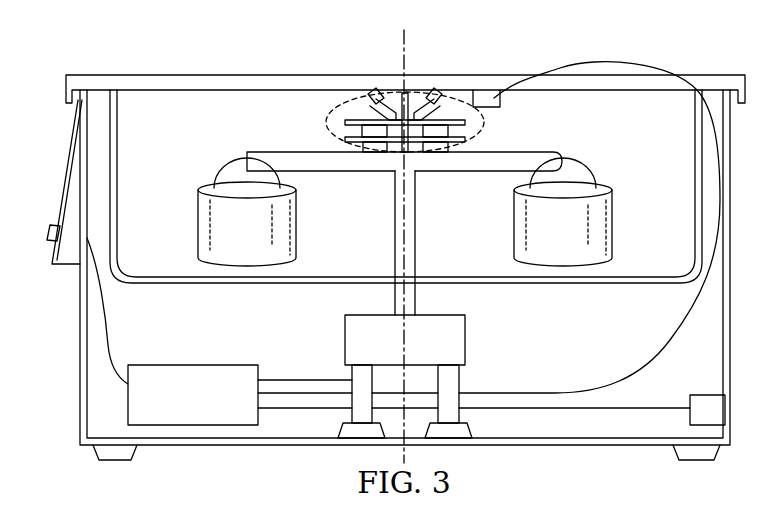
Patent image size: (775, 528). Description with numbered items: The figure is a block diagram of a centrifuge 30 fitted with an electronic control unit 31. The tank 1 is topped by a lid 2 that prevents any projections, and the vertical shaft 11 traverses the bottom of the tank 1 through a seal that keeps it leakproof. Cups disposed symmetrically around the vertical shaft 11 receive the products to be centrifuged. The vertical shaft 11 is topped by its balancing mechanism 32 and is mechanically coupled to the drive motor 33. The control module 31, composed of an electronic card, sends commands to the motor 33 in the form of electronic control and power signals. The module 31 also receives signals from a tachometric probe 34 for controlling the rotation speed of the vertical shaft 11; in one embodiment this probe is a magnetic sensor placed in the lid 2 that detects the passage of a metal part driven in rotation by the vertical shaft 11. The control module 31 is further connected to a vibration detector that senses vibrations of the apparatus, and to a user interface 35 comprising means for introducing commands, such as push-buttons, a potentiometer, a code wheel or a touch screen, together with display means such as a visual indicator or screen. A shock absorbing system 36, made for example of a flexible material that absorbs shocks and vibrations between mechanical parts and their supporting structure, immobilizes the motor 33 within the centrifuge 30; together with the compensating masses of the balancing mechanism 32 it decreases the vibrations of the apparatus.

The tank 1 is at (118, 170).
The lid 2 is at (204, 82).
The vertical shaft 11 is at (416, 229).
The centrifuge 30 is at (240, 476).
The electronic control unit 31 is at (192, 364).
The balancing mechanism 32 is at (323, 127).
The drive motor 33 is at (345, 342).
The tachometric probe 34 is at (497, 110).
The user interface 35 is at (64, 215).
The shock absorbing system 36 is at (462, 380).